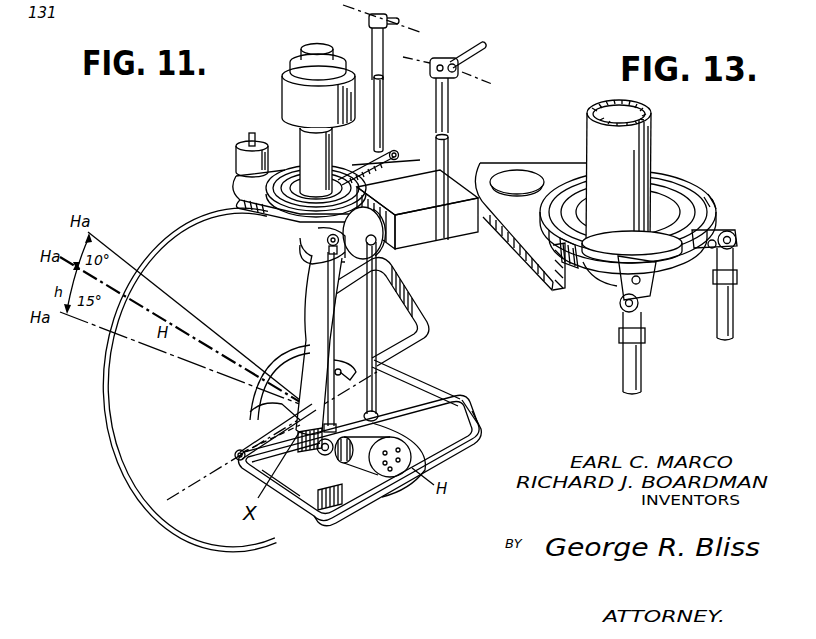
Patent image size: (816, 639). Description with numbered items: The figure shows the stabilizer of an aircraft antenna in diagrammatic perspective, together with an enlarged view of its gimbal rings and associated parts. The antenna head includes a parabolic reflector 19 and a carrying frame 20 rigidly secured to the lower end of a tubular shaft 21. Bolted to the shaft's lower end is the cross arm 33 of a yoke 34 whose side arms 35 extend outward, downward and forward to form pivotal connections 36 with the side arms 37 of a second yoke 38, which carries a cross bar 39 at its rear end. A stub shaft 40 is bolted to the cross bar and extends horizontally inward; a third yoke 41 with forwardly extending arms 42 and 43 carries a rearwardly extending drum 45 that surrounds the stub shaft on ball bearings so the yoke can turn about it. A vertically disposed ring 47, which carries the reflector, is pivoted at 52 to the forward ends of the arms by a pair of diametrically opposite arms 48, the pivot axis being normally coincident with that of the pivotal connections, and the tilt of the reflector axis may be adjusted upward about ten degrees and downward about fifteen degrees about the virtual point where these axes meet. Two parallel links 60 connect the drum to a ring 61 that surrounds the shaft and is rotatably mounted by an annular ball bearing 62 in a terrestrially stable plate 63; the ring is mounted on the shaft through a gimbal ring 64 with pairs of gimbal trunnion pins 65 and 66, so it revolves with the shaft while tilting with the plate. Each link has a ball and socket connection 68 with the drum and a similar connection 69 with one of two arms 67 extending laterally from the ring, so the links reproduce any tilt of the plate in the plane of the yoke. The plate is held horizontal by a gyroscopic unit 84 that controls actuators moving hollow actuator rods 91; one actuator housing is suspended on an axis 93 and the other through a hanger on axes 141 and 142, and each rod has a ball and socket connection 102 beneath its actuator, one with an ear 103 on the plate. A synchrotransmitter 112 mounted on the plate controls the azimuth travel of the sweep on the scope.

In FIG. 11, the parabolic reflector 19 is at (108, 460).
In FIG. 11, the carrying frame 20 is at (476, 363).
In FIG. 11, the tubular shaft 21 is at (333, 141).
In FIG. 13, the tubular shaft 21 is at (653, 141).
In FIG. 11, the cross arm 33 is at (305, 340).
In FIG. 11, the yoke 34 is at (412, 268).
In FIG. 11, the side arms 35 is at (307, 318).
In FIG. 11, the pivotal connections 36 is at (242, 462).
In FIG. 11, the side arms 37 is at (462, 396).
In FIG. 11, the second yoke 38 is at (323, 540).
In FIG. 11, the cross bar 39 is at (470, 434).
In FIG. 11, the stub shaft 40 is at (412, 455).
In FIG. 11, the third yoke 41 is at (324, 474).
In FIG. 11, the arm 42 is at (306, 446).
In FIG. 11, the arm 43 is at (343, 342).
In FIG. 11, the drum 45 is at (425, 470).
In FIG. 11, the ring 47 is at (290, 356).
In FIG. 11, the arms 48 is at (236, 424).
In FIG. 11, the pivot 52 is at (234, 452).
In FIG. 11, the links 60 is at (378, 305).
In FIG. 13, the links 60 is at (735, 330).
In FIG. 13, the ring 61 is at (596, 292).
In FIG. 13, the annular ball bearing 62 is at (580, 266).
In FIG. 11, the plate 63 is at (246, 180).
In FIG. 13, the plate 63 is at (566, 158).
In FIG. 11, the gimbal ring 64 is at (290, 212).
In FIG. 13, the gimbal ring 64 is at (641, 238).
In FIG. 13, the gimbal trunnion pins 65 is at (662, 230).
In FIG. 13, the gimbal trunnion pins 66 is at (556, 262).
In FIG. 13, the arms 67 is at (722, 238).
In FIG. 11, the ball and socket universal joint connection 68 is at (379, 413).
In FIG. 11, the universal joint connections 69 is at (315, 253).
In FIG. 13, the universal joint connections 69 is at (738, 250).
In FIG. 11, the gyroscopic unit 84 is at (428, 200).
In FIG. 11, the actuator rod 91 is at (384, 100).
In FIG. 11, the axis 93 is at (420, 32).
In FIG. 11, the ball and socket connection 102 is at (383, 150).
In FIG. 11, the ear 103 is at (388, 163).
In FIG. 11, the synchrotransmitter 112 is at (240, 153).
In FIG. 11, the axis 141 is at (486, 44).
In FIG. 11, the axis 142 is at (491, 86).